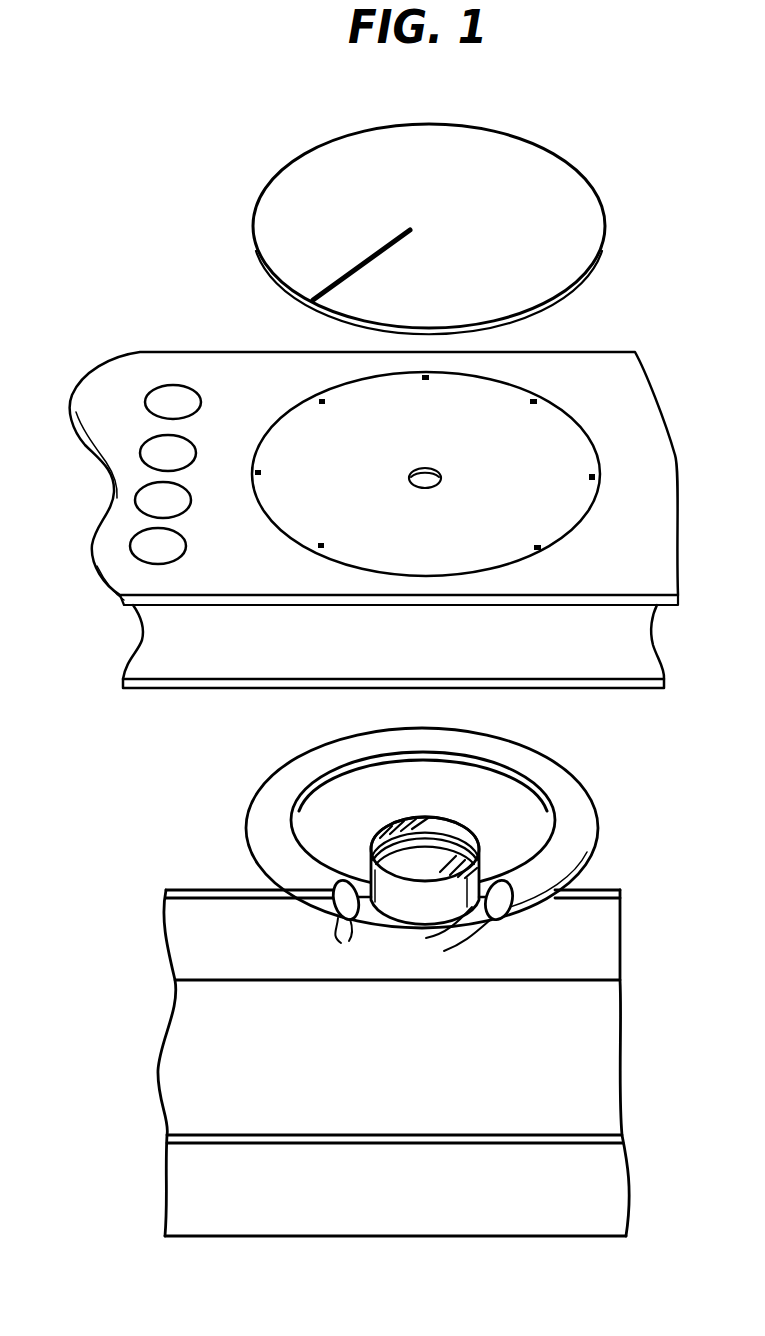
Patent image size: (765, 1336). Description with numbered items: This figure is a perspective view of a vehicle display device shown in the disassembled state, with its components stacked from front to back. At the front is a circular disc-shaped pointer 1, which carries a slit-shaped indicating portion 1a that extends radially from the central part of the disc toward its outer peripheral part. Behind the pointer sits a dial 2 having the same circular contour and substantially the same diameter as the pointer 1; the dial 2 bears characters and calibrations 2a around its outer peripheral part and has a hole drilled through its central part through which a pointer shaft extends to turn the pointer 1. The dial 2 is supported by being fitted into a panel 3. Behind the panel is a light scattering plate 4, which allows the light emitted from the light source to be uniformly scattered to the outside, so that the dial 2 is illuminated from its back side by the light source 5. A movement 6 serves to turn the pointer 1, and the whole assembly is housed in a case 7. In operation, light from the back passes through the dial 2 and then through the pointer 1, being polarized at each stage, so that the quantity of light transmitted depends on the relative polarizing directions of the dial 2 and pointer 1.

The pointer 1 is at (280, 170).
The indicating portion 1a is at (333, 280).
The dial 2 is at (543, 417).
The characters and calibrations 2a is at (582, 470).
The panel 3 is at (85, 452).
The light scattering plate 4 is at (640, 647).
The light source 5 is at (600, 830).
The movement 6 is at (461, 834).
The case 7 is at (585, 1062).